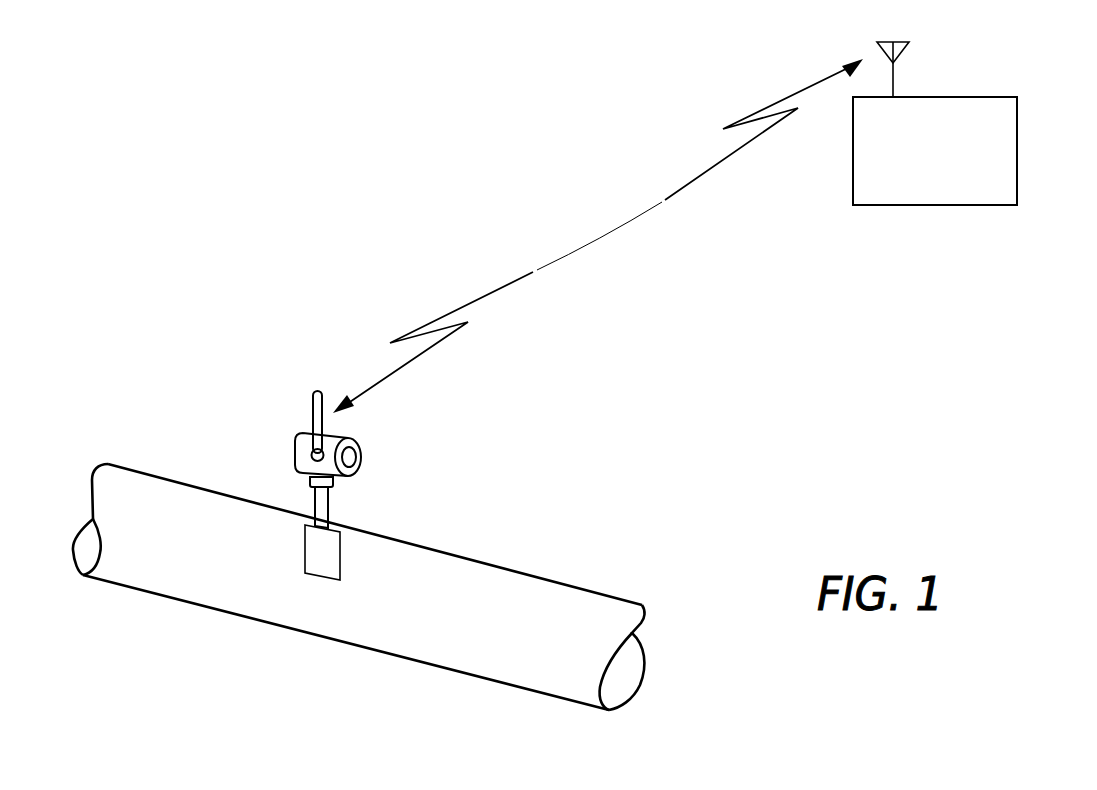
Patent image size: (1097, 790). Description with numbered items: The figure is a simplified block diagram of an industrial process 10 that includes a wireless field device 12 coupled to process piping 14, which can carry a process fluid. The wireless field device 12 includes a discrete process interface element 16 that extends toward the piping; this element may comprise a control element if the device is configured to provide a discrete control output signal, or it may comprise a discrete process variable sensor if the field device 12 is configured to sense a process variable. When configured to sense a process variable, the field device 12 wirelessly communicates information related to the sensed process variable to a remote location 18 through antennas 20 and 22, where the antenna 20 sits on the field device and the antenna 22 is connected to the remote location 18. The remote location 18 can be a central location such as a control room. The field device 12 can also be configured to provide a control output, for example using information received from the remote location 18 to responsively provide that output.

The industrial process 10 is at (436, 201).
The wireless field device 12 is at (355, 457).
The process piping 14 is at (512, 568).
The discrete process interface element 16 is at (332, 558).
The remote location 18 is at (1017, 132).
The antenna 20 is at (310, 412).
The antenna 22 is at (902, 56).